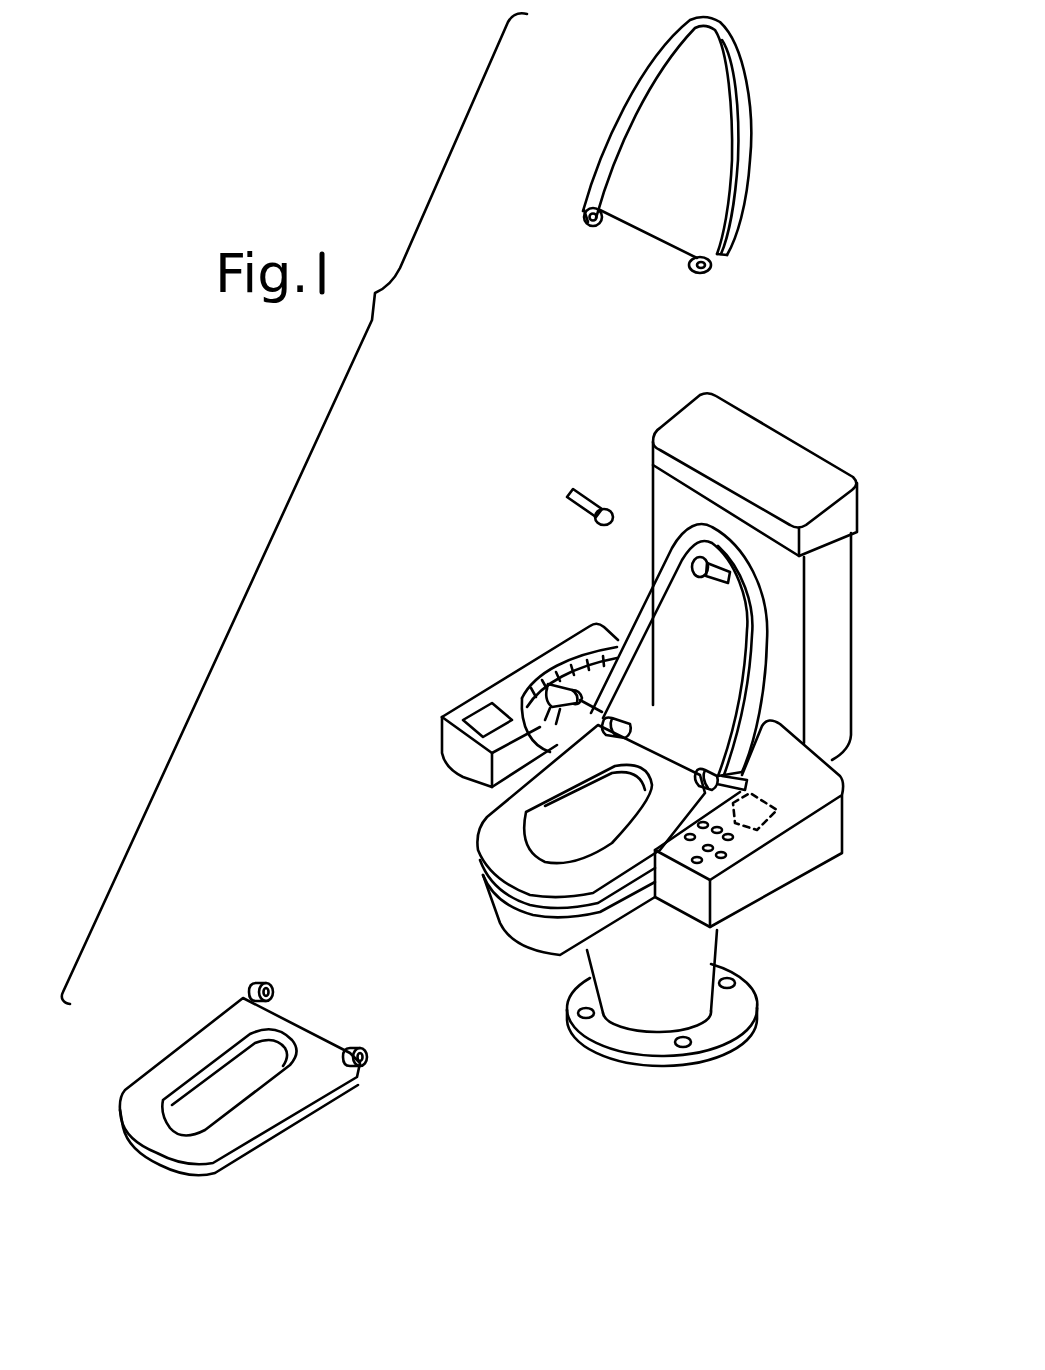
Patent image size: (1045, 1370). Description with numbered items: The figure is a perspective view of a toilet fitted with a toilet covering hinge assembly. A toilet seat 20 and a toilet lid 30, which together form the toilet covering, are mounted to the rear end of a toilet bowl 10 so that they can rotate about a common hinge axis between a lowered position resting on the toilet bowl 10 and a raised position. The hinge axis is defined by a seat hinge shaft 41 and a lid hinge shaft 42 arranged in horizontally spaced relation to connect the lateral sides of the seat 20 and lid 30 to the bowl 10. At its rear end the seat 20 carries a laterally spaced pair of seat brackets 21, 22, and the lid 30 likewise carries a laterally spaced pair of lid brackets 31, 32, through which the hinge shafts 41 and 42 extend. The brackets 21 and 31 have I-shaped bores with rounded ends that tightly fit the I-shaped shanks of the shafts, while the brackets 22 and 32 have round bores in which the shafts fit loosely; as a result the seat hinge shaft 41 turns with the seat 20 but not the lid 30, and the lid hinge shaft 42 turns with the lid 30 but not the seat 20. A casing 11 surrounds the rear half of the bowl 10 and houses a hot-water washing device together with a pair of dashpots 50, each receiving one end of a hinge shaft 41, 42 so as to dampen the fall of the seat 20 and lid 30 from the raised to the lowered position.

The toilet bowl 10 is at (497, 913).
The casing 11 is at (830, 812).
The toilet seat 20 is at (492, 822).
The seat bracket 21 is at (258, 983).
The seat bracket 22 is at (372, 1056).
The toilet lid 30 is at (740, 58).
The lid bracket 31 is at (703, 272).
The lid bracket 32 is at (582, 226).
The seat hinge shaft 41 is at (587, 522).
The lid hinge shaft 42 is at (697, 572).
The dashpot 50 is at (522, 697).